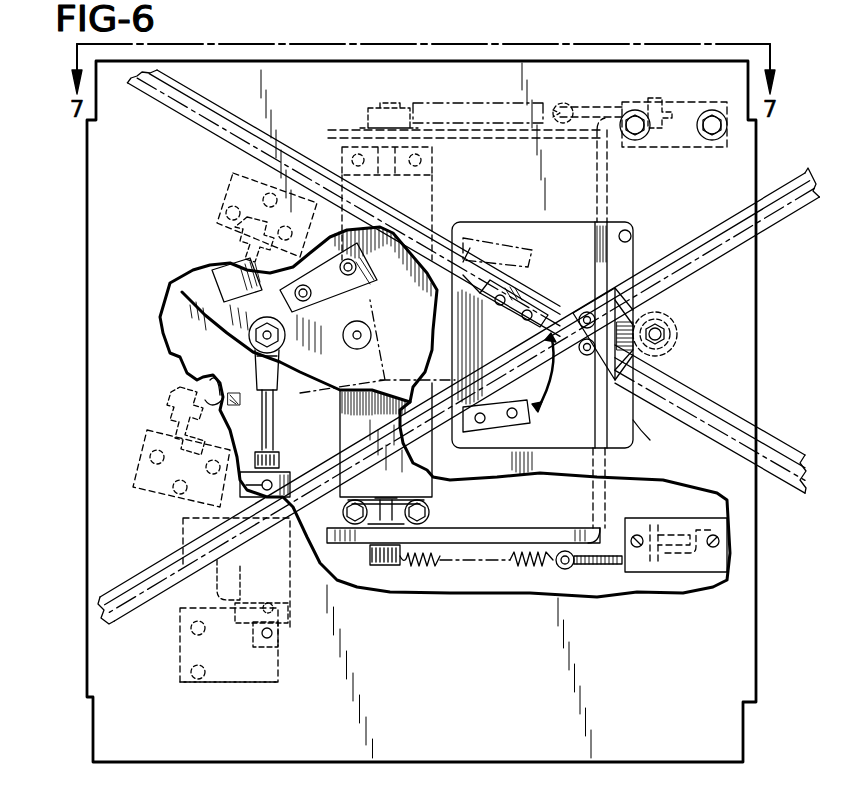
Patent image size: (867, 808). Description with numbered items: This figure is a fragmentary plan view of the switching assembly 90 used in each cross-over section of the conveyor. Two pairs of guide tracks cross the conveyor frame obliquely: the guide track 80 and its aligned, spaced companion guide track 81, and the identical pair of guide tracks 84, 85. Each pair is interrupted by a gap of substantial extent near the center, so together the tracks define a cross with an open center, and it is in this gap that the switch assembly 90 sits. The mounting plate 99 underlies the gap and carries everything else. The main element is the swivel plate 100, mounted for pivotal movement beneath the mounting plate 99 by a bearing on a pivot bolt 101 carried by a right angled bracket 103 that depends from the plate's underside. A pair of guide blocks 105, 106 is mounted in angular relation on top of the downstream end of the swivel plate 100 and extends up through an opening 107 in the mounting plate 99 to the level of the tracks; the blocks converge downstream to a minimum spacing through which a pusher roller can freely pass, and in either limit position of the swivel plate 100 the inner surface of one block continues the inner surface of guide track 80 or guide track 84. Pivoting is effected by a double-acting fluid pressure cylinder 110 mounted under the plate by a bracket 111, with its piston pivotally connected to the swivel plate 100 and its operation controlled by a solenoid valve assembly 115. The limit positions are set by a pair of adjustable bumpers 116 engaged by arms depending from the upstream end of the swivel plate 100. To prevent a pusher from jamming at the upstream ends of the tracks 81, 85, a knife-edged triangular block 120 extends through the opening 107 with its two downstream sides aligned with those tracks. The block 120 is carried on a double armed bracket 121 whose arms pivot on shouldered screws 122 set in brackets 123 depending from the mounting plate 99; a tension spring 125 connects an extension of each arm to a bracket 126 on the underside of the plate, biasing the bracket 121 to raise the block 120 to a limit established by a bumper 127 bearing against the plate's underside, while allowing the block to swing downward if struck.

The guide track 80 is at (218, 140).
The second guide track 81 is at (790, 437).
The guide track 84 is at (160, 562).
The guide track 85 is at (700, 288).
The switch assembly 90 is at (645, 243).
The mounting plate 99 is at (639, 721).
The swivel plate 100 is at (285, 400).
The pivot bolt 101 is at (353, 338).
The right angled bracket 103 is at (393, 240).
The guide block 105 is at (540, 252).
The guide block 106 is at (532, 425).
The opening 107 is at (643, 160).
The double-acting fluid pressure cylinder 110 is at (296, 475).
The bracket 111 is at (240, 686).
The solenoid valve assembly 115 is at (175, 600).
The adjustable bumpers 116 is at (195, 283).
The knife-edged triangular block 120 is at (570, 308).
The double armed bracket 121 is at (645, 430).
The shouldered screws 122 is at (382, 120).
The brackets 123 is at (342, 158).
The tension spring 125 is at (462, 100).
The bracket 126 is at (650, 575).
The bumper 127 is at (678, 322).